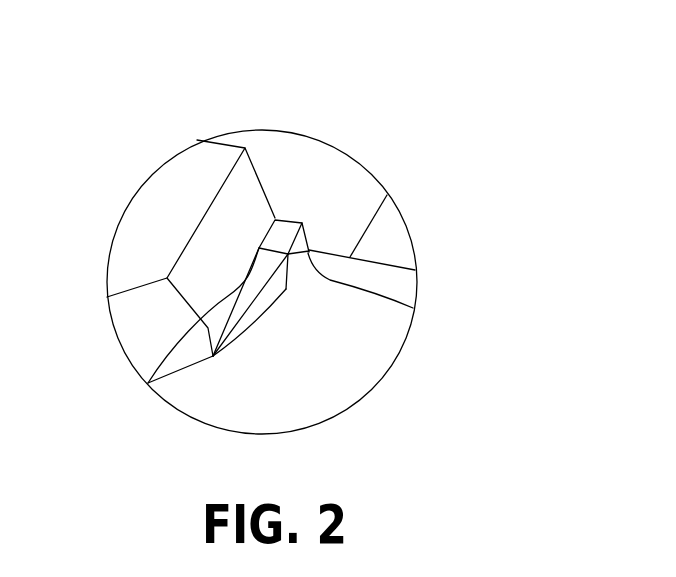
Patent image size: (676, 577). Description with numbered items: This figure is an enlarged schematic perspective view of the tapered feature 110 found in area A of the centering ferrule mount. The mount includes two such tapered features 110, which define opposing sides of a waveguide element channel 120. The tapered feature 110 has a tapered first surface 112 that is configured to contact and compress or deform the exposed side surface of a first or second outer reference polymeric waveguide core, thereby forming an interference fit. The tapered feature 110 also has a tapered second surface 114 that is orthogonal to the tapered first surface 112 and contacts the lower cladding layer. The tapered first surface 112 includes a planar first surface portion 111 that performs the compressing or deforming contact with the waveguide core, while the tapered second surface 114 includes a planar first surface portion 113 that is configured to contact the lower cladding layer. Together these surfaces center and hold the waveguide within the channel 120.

The tapered feature 110 is at (342, 208).
The planar first surface portion 111 is at (413, 308).
The tapered first surface 112 is at (286, 289).
The planar first surface portion 113 is at (285, 227).
The tapered second surface 114 is at (248, 288).
The waveguide element channel 120 is at (285, 373).
The area A is at (410, 238).